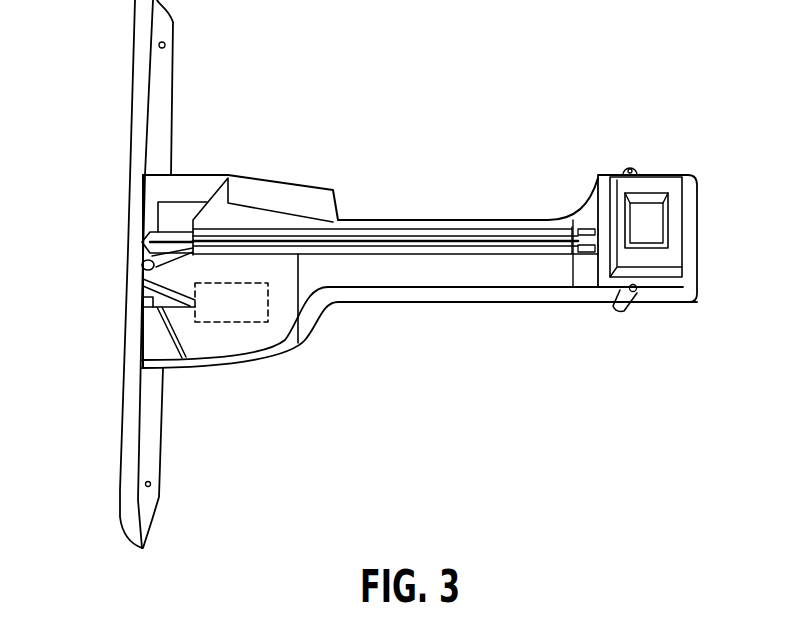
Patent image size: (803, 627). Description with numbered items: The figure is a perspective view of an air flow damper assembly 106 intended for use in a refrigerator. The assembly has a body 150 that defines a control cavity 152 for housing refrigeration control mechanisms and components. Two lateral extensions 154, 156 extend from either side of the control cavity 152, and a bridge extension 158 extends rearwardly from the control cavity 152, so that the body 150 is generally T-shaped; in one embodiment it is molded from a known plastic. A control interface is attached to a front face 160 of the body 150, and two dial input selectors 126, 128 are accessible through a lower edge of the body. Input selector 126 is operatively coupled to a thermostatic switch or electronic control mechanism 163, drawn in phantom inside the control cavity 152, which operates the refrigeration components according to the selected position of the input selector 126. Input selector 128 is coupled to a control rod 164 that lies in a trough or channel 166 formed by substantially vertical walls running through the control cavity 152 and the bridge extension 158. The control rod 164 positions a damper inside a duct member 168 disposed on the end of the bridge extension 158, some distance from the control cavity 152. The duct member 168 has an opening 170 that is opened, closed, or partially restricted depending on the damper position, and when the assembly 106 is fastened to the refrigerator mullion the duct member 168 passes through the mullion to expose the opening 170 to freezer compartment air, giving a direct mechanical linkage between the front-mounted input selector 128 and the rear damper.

The air flow damper assembly 106 is at (478, 113).
The dial input selector 126 is at (140, 307).
The dial input selector 128 is at (142, 242).
The body 150 is at (338, 346).
The control cavity 152 is at (255, 335).
The lateral extension 154 is at (152, 430).
The lateral extension 156 is at (163, 68).
The bridge extension 158 is at (475, 297).
The front face 160 is at (143, 274).
The thermostatic switch or electronic control mechanism 163 is at (206, 292).
The control rod 164 is at (468, 240).
The trough or channel 166 is at (393, 225).
The duct member 168 is at (663, 185).
The opening 170 is at (653, 225).